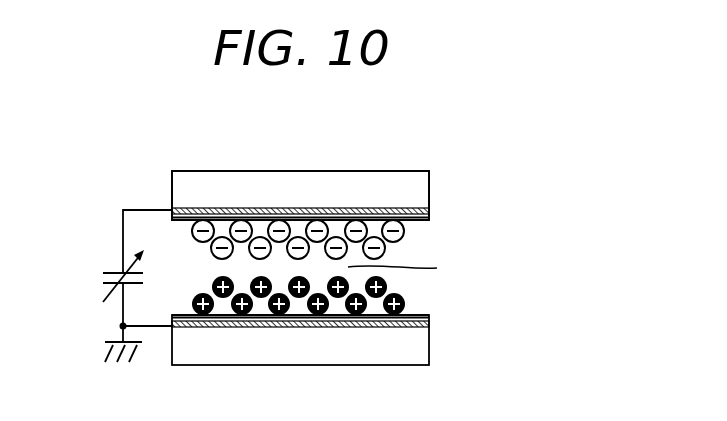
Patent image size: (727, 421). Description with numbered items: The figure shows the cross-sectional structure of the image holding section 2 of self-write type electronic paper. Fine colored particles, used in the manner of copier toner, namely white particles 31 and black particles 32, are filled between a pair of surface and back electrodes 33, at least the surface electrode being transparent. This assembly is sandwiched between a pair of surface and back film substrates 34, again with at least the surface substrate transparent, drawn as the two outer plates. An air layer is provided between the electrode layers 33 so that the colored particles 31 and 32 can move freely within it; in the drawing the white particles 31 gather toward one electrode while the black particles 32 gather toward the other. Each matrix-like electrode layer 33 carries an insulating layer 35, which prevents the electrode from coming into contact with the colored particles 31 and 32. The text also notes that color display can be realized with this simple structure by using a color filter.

The image holding section 2 is at (173, 156).
The white particles 31 is at (343, 217).
The black particles 32 is at (392, 284).
The surface and back electrodes 33 is at (412, 206).
The surface and back film substrates 34 is at (390, 177).
The insulating layer 35 is at (420, 218).